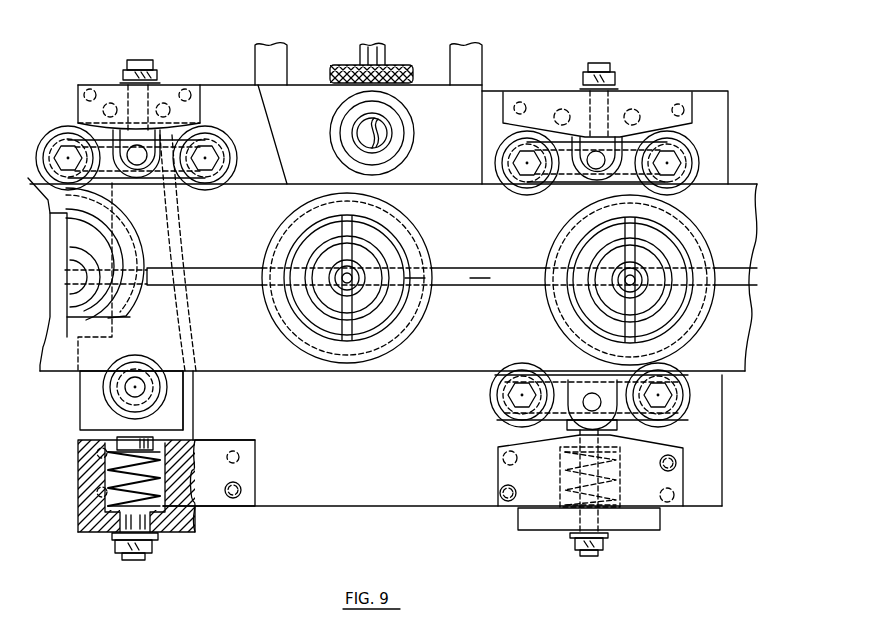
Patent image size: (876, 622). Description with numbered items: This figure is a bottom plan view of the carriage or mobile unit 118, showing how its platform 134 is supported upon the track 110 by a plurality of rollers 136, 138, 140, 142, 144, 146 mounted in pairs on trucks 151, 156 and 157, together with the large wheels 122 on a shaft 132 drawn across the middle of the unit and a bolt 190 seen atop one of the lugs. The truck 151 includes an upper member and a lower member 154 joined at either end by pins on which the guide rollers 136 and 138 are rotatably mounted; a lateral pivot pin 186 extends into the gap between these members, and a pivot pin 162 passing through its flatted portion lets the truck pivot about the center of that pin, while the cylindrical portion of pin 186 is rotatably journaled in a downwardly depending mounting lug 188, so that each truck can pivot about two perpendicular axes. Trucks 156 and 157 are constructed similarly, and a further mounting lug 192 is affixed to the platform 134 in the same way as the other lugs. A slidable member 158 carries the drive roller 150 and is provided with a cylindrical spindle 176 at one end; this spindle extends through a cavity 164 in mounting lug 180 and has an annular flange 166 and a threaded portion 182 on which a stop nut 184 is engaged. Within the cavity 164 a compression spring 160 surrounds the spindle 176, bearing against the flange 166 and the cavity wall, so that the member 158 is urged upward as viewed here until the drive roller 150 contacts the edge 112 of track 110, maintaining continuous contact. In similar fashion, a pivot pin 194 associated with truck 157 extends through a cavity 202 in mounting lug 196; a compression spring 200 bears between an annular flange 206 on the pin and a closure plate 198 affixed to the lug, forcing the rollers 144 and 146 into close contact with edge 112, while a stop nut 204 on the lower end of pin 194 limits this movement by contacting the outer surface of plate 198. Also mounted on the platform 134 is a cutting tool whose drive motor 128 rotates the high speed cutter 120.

The track 110 is at (393, 277).
The edge of track 112 is at (307, 373).
The carriage or mobile unit 118 is at (422, 508).
The high speed cutter 120 is at (380, 130).
The roller wheel 122 is at (413, 310).
The drive motor 128 is at (398, 163).
The shaft 132 is at (481, 270).
The platform 134 is at (457, 438).
The guide roller 136 is at (66, 128).
The guide roller 138 is at (223, 133).
The roller 140 is at (512, 192).
The roller 142 is at (677, 187).
The roller 144 is at (493, 396).
The roller 146 is at (673, 422).
The drive roller 150 is at (128, 357).
The truck 151 is at (172, 142).
The lower member of truck 154 is at (182, 187).
The truck 156 is at (562, 172).
The truck 157 is at (558, 378).
The slidable member 158 is at (167, 312).
The compression spring 160 is at (193, 515).
The pivot pin 162 is at (137, 162).
The cavity 164 is at (110, 476).
The annular flange 166 is at (175, 453).
The cylindrical shaft or spindle 176 is at (115, 438).
The mounting lug 180 is at (187, 538).
The threaded portion 182 is at (113, 539).
The stop nut 184 is at (152, 556).
The lateral pivot pin 186 is at (147, 59).
The mounting lug 188 is at (110, 92).
The bolt 190 is at (604, 63).
The mounting lug 192 is at (657, 105).
The pivot pin 194 is at (605, 543).
The mounting lug 196 is at (650, 504).
The closure plate 198 is at (627, 526).
The compression spring 200 is at (610, 489).
The cavity 202 is at (608, 466).
The stop nut 204 is at (572, 539).
The annular flange 206 is at (563, 458).